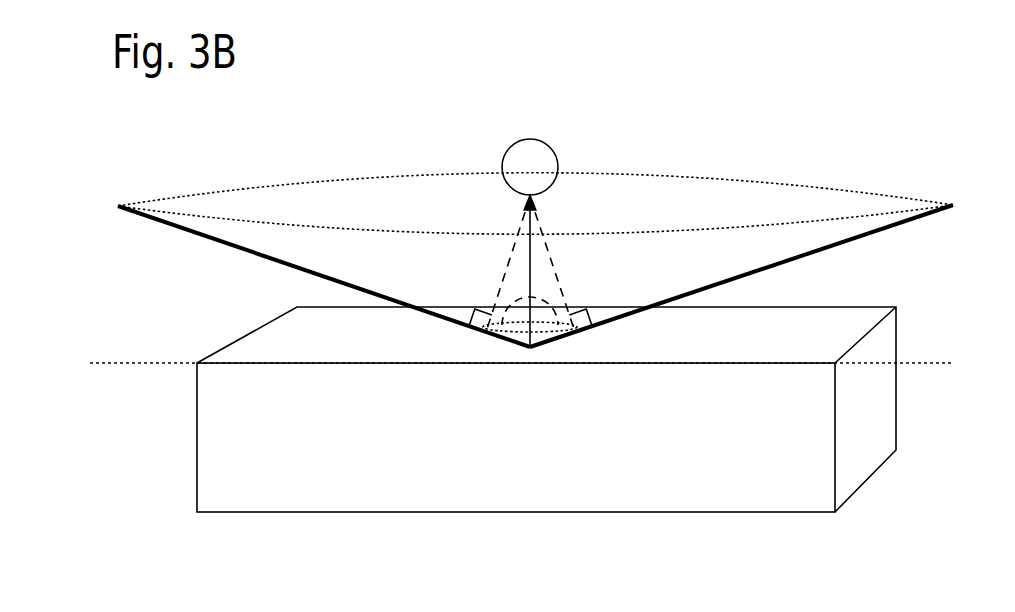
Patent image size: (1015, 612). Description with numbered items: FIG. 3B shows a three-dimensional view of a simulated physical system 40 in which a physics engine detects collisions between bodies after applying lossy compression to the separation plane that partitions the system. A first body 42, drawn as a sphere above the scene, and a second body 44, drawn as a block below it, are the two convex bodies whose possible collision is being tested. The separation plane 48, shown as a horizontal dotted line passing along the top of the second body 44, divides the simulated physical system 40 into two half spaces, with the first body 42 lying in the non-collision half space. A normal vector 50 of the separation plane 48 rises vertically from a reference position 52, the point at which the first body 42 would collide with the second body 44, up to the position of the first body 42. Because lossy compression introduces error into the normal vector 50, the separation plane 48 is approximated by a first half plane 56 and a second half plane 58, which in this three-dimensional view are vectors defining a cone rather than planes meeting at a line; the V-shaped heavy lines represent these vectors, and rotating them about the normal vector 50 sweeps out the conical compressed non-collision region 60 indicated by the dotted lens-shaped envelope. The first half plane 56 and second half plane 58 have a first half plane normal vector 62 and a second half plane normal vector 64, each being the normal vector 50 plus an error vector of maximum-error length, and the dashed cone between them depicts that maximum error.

The simulated physical system 40 is at (878, 138).
The first body 42 is at (503, 170).
The second body 44 is at (515, 512).
The separation plane 48 is at (155, 365).
The normal vector 50 is at (533, 280).
The reference position 52 is at (500, 300).
The first half plane 56 is at (243, 250).
The second half plane 58 is at (688, 290).
The compressed non-collision region 60 is at (928, 183).
The first half plane normal vector 62 is at (517, 230).
The second half plane normal vector 64 is at (541, 228).